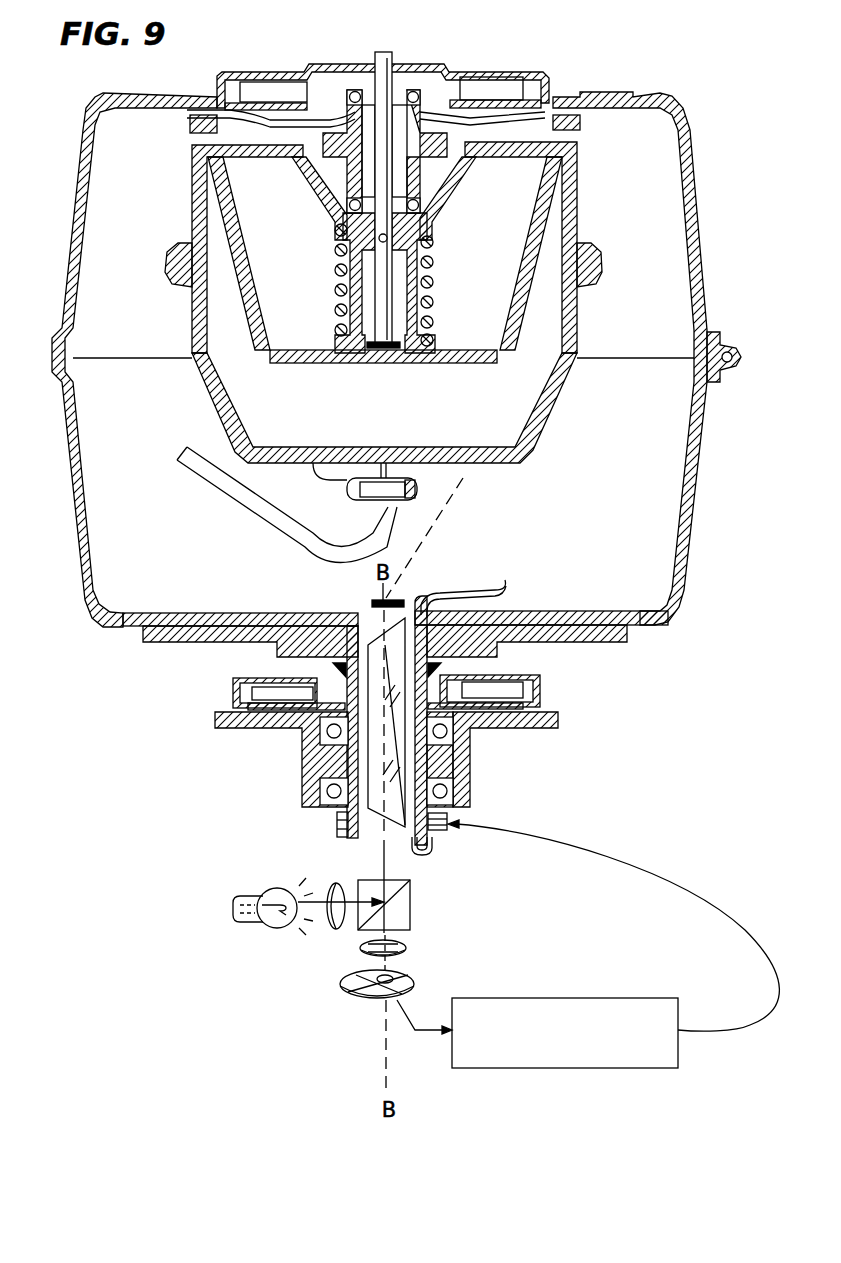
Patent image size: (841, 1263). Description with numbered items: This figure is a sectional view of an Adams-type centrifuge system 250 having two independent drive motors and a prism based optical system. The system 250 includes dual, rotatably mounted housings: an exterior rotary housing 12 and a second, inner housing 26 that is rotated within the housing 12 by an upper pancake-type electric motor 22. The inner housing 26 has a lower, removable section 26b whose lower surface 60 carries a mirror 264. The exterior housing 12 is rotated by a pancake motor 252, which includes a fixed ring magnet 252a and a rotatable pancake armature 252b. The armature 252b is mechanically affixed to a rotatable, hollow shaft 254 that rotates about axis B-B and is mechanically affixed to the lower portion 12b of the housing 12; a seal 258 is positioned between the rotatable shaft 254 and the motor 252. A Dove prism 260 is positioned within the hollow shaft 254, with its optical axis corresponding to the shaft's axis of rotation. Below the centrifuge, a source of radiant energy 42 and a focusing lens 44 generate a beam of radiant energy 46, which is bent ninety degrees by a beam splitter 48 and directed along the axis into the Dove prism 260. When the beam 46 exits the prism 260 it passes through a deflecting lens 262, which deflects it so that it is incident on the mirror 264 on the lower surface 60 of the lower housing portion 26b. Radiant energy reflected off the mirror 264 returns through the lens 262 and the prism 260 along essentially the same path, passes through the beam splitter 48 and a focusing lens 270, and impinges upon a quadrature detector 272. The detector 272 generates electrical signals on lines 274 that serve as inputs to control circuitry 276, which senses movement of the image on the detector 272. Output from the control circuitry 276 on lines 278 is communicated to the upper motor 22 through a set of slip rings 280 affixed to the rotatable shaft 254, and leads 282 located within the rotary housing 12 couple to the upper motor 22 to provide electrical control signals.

The pancake-type electric motor 22 is at (549, 68).
The system 250 is at (693, 120).
The rotary housing 12 is at (693, 194).
The lower portion of the housing 12b is at (132, 611).
The inner housing 26 is at (582, 214).
The lower removable section of the inner housing 26b is at (552, 400).
The lower surface 60 is at (316, 481).
The mirror 264 is at (473, 534).
The Dove prism 260 is at (373, 640).
The deflecting lens 262 is at (406, 600).
The leads 282 is at (503, 592).
The hollow shaft 254 is at (333, 675).
The seal 258 is at (443, 667).
The fixed ring magnet 252a is at (250, 688).
The pancake motor 252 is at (548, 690).
The rotatable pancake armature 252b is at (267, 729).
The slip rings 280 is at (337, 823).
The lines 278 is at (598, 852).
The beam of radiant energy 46 is at (384, 853).
The source of radiant energy 42 is at (272, 928).
The focusing lens 44 is at (333, 930).
The beam splitter 48 is at (413, 905).
The focusing lens 270 is at (410, 949).
The quadrature detector 272 is at (415, 981).
The lines 274 is at (387, 1027).
The control circuitry 276 is at (572, 1068).